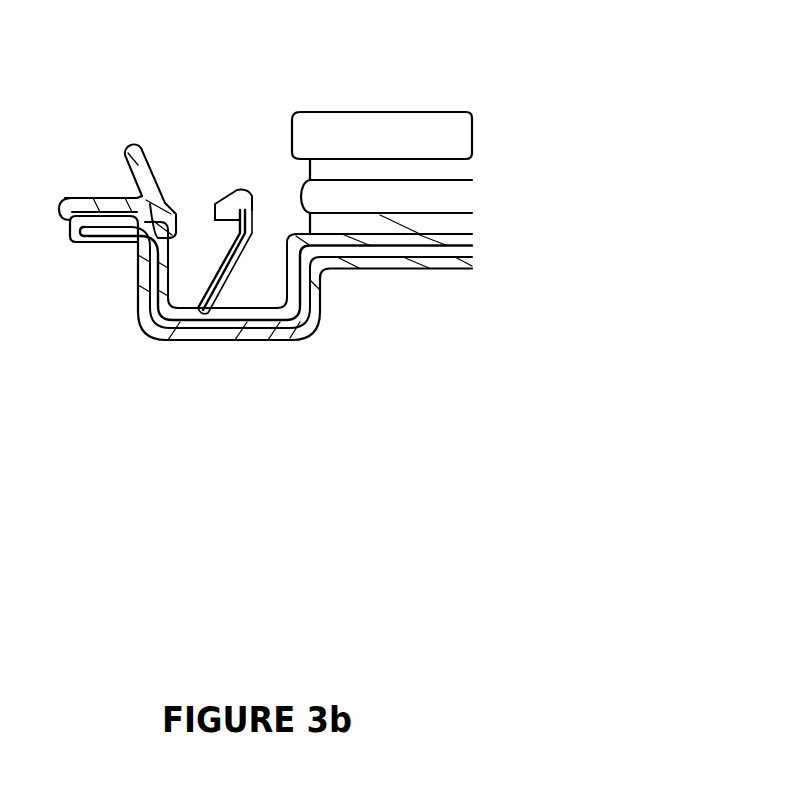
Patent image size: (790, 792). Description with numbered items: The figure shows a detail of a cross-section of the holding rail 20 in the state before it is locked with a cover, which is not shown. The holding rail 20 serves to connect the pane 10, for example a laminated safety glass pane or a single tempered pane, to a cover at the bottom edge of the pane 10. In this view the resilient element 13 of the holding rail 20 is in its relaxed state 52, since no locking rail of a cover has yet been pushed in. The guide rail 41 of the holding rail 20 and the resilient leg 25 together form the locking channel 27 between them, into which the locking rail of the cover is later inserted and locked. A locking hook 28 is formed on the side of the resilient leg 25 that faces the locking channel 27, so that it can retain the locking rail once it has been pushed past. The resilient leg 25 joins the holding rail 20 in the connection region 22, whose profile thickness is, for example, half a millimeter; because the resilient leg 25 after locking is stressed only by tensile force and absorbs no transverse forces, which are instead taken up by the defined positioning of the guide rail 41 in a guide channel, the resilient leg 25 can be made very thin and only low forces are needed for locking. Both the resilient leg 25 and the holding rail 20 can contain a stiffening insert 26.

The pane 10 is at (480, 113).
The resilient element 13 is at (102, 130).
The relaxed state 52 is at (131, 150).
The holding rail 20 is at (263, 335).
The connection region 22 is at (210, 300).
The resilient leg 25 is at (246, 257).
The stiffening insert 26 is at (230, 273).
The locking channel 27 is at (195, 213).
The locking hook 28 is at (232, 206).
The guide rail 41 is at (112, 244).